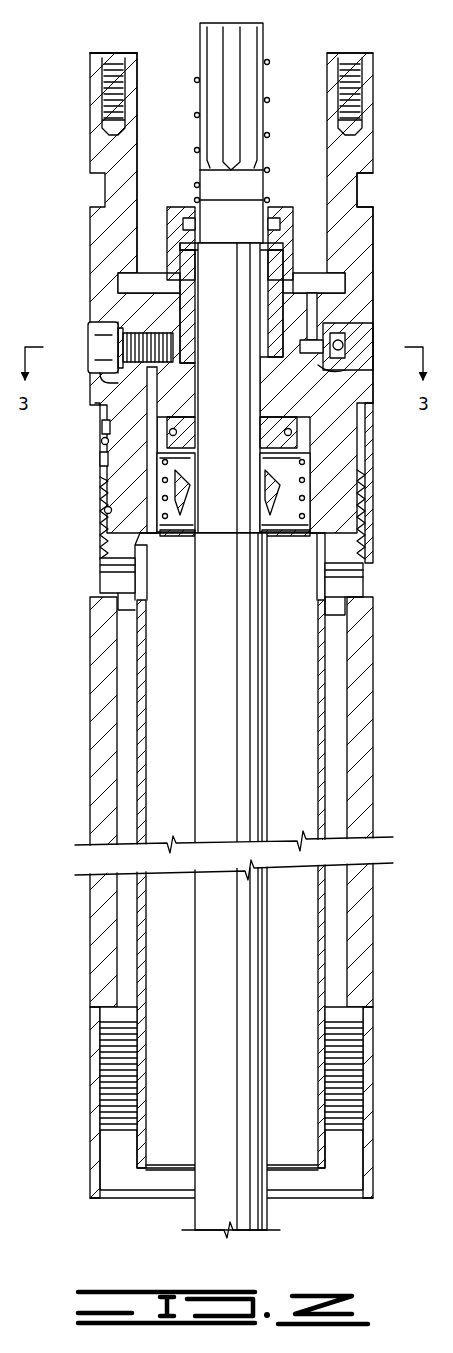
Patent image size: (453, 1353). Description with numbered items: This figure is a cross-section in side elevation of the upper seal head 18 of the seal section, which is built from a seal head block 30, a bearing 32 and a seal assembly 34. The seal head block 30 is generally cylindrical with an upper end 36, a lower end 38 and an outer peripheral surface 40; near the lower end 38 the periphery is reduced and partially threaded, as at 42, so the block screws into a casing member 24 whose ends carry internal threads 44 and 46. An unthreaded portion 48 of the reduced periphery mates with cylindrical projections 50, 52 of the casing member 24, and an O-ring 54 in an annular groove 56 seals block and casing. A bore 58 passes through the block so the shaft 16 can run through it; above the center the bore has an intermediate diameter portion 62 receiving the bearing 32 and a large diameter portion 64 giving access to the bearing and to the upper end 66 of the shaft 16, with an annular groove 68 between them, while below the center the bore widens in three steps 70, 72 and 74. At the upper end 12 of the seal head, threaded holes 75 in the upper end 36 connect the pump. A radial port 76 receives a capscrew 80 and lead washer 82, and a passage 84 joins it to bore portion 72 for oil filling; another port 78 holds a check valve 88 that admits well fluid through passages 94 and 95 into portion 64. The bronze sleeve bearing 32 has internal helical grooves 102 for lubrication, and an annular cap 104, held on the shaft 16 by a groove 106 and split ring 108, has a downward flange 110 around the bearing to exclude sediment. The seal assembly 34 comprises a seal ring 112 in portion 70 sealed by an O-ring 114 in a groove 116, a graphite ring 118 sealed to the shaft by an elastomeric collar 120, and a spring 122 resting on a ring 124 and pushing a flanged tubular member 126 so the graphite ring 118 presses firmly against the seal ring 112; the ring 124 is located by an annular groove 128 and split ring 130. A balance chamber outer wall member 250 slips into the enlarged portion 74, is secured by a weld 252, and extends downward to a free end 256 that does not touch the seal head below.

The upper end 12 is at (372, 50).
The shaft 16 is at (228, 351).
The upper seal head 18 is at (380, 193).
The casing member 24 is at (105, 787).
The seal head block 30 is at (362, 228).
The bearing 32 is at (280, 258).
The seal assembly 34 is at (308, 465).
The upper end 36 is at (137, 53).
The lower end 38 is at (363, 575).
The outer peripheral surface 40 is at (375, 150).
The threaded portion 42 is at (100, 530).
The internal threads 44 is at (100, 512).
The internal threads 46 is at (115, 1060).
The unthreaded portion 48 is at (103, 460).
The cylindrical projection 50 is at (98, 410).
The cylindrical projection 52 is at (95, 1170).
The O-ring 54 is at (103, 428).
The annular groove 56 is at (102, 443).
The bore 58 is at (140, 152).
The intermediate diameter portion 62 is at (140, 305).
The large diameter portion 64 is at (137, 103).
The upper end 66 is at (250, 45).
The annular groove 68 is at (118, 283).
The bore portion 70 is at (370, 425).
The bore portion 72 is at (367, 495).
The enlarged diameter portion 74 is at (314, 560).
The threaded holes 75 is at (112, 62).
The port 76 is at (120, 345).
The port 78 is at (360, 328).
The capscrew 80 is at (100, 348).
The lead washer 82 is at (105, 383).
The passage 84 is at (157, 380).
The check valve 88 is at (345, 350).
The passage 94 is at (345, 367).
The passage 95 is at (318, 300).
The internal helical grooves 102 is at (195, 318).
The annular cap 104 is at (268, 207).
The groove 106 is at (213, 243).
The split ring 108 is at (268, 258).
The circular flange 110 is at (180, 250).
The seal ring 112 is at (180, 420).
The O-ring 114 is at (280, 432).
The groove 116 is at (362, 443).
The graphite ring 118 is at (190, 465).
The elastomeric collar 120 is at (190, 500).
The spring 122 is at (300, 520).
The ring 124 is at (290, 540).
The flanged tubular member 126 is at (170, 478).
The annular groove 128 is at (210, 540).
The split ring 130 is at (188, 542).
The balance chamber outer wall member 250 is at (325, 750).
The weld 252 is at (100, 575).
The free end 256 is at (322, 1172).